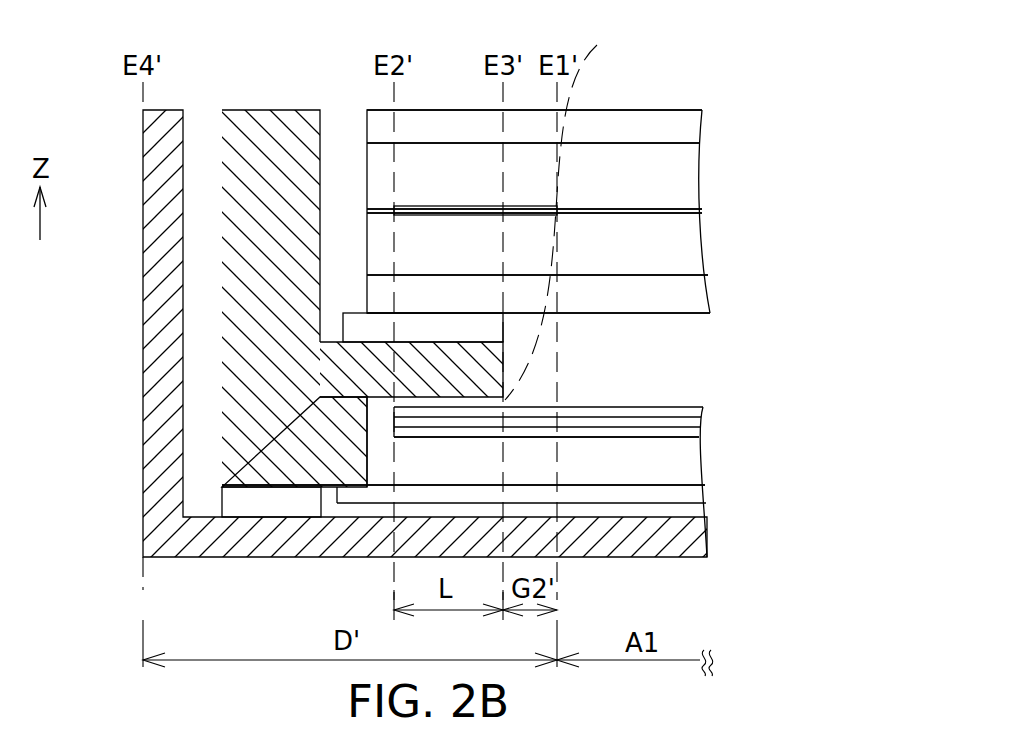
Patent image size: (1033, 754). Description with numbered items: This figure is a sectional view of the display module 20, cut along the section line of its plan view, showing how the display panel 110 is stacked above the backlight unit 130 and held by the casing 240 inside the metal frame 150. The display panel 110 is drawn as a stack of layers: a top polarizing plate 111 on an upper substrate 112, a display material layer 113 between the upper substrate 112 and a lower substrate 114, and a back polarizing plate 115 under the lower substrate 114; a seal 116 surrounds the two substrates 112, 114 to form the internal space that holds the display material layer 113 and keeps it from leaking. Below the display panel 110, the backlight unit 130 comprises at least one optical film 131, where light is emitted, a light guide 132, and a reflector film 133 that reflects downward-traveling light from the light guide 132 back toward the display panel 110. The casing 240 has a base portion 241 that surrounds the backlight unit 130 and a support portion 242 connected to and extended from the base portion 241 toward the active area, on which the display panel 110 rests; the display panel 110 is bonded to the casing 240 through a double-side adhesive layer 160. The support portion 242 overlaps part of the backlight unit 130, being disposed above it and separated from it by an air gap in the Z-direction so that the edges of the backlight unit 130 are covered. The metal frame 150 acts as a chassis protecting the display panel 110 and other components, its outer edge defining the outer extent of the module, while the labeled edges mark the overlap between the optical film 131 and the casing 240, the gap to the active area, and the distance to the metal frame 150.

The display module 20 is at (854, 38).
The display panel 110 is at (797, 115).
The top polarizing plate 111 is at (685, 126).
The upper substrate 112 is at (682, 177).
The display material layer 113 is at (698, 212).
The lower substrate 114 is at (693, 260).
The back polarizing plate 115 is at (697, 293).
The seal 116 is at (553, 213).
The backlight unit 130 is at (797, 408).
The optical film 131 is at (703, 407).
The light guide 132 is at (688, 465).
The reflector film 133 is at (693, 493).
The metal frame 150 is at (158, 466).
The double-side adhesive layer 160 is at (360, 329).
The casing 240 is at (62, 330).
The base portion 241 is at (283, 417).
The support portion 242 is at (378, 370).